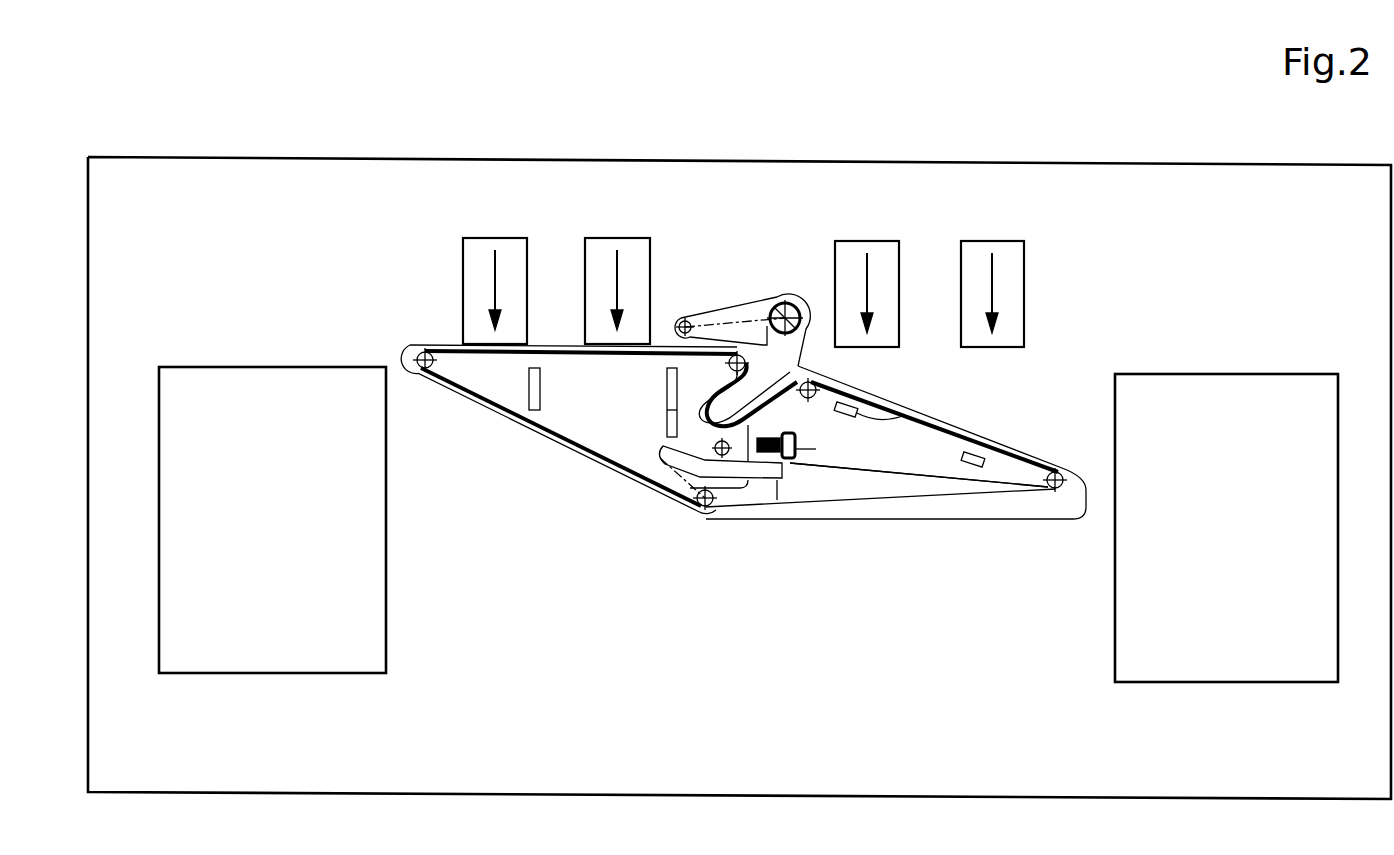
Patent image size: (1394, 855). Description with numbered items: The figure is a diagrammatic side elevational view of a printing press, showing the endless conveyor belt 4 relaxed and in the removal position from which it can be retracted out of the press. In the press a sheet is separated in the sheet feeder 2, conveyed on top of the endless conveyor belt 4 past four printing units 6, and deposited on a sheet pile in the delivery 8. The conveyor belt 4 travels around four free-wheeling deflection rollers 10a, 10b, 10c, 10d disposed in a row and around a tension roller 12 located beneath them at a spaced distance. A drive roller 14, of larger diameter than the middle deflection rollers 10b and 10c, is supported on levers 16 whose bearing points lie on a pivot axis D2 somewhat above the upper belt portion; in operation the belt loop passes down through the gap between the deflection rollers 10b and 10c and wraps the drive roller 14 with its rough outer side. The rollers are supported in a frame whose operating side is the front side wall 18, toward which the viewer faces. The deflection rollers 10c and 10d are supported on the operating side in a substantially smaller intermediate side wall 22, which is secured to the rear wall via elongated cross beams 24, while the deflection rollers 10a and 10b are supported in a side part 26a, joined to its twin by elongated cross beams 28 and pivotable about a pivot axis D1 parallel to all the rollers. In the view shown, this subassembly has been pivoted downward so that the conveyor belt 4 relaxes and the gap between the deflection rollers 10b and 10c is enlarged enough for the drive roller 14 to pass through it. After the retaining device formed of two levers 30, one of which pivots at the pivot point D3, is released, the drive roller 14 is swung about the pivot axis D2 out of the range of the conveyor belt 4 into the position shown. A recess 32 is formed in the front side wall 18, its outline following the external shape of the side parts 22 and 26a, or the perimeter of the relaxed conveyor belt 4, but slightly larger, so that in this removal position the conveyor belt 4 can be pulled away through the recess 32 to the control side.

The sheet feeder 2 is at (1237, 546).
The endless conveyor belt 4 is at (940, 496).
The printing units 6 is at (1008, 248).
The delivery 8 is at (278, 541).
The deflection roller 10a is at (1051, 472).
The deflection roller 10b is at (850, 386).
The deflection roller 10c is at (725, 365).
The deflection roller 10d is at (432, 370).
The tension roller 12 is at (696, 510).
The drive roller 14 is at (800, 300).
The levers 16 is at (730, 300).
The front side wall 18 is at (1100, 172).
The intermediate side wall 22 is at (740, 500).
The cross beams 24 is at (534, 390).
The side part 26a is at (888, 466).
The cross beams 28 is at (966, 448).
The levers 30 is at (778, 482).
The recess 32 is at (1043, 520).
The pivot axis D1 is at (667, 396).
The pivot axis D2 is at (686, 322).
The pivot point D3 is at (648, 486).